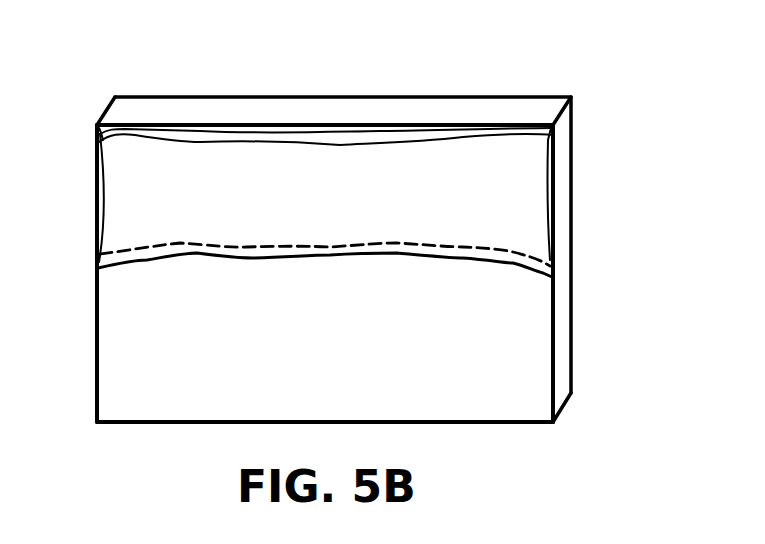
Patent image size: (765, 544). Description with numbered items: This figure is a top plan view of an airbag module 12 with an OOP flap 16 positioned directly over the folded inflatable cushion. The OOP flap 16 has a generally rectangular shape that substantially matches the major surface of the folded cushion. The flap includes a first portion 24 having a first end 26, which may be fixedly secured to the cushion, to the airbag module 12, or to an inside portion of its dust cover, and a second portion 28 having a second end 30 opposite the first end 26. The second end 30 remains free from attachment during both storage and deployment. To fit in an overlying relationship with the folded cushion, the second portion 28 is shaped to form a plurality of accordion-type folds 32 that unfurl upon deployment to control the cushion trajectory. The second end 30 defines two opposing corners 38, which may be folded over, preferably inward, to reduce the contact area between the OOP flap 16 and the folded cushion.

The airbag module 12 is at (620, 93).
The OOP flap 16 is at (135, 370).
The first portion 24 is at (535, 375).
The first end 26 is at (465, 422).
The second portion 28 is at (527, 282).
The second end 30 is at (339, 145).
The accordion-type folds 32 is at (523, 213).
The opposing corners 38 is at (127, 152).